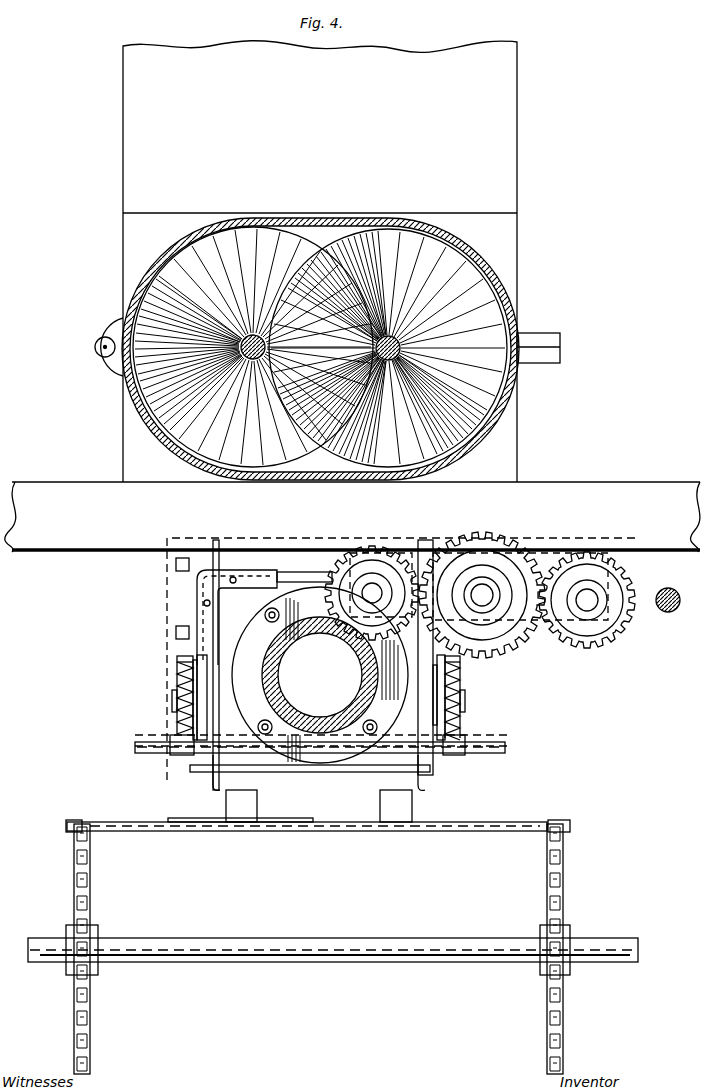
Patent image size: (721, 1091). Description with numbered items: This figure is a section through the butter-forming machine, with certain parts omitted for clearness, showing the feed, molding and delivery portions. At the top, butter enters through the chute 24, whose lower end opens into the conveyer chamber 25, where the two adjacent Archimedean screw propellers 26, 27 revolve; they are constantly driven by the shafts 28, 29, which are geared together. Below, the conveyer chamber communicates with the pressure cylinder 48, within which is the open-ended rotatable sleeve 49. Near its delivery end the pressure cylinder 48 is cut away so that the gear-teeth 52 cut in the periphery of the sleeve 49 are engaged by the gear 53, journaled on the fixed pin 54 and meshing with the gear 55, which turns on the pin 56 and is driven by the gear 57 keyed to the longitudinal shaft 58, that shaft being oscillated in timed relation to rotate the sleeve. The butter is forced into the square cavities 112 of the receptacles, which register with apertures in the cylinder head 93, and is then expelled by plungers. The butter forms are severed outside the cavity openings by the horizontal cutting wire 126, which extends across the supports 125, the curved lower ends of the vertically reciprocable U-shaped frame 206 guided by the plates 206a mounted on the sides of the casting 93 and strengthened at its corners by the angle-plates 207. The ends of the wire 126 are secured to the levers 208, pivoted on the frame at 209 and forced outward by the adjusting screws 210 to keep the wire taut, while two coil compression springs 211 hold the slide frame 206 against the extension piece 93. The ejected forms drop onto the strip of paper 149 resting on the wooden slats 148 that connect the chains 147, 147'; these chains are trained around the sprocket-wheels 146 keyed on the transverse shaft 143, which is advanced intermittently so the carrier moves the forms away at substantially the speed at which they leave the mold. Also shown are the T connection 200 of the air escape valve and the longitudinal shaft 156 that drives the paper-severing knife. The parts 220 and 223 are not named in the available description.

The chute 24 is at (125, 190).
The conveyer chamber 25 is at (517, 305).
The screw propeller 26 is at (388, 348).
The screw propeller 27 is at (253, 347).
The shaft 28 is at (398, 356).
The shaft 29 is at (250, 336).
The pressure cylinder 48 is at (322, 745).
The rotatable sleeve 49 is at (270, 648).
The gear-teeth 52 is at (320, 675).
The gear 53 is at (383, 545).
The fixed pin 54 is at (376, 590).
The gear 55 is at (490, 548).
The pin 56 is at (484, 593).
The gear 57 is at (587, 648).
The longitudinal shaft 58 is at (580, 606).
The cylinder head 93 is at (466, 705).
The cavities 112 is at (185, 668).
The supports 125 is at (240, 775).
The cutting wire 126 is at (325, 770).
The transverse shaft 143 is at (283, 945).
The sprocket-wheels 146 is at (92, 902).
The chain 147 is at (71, 813).
The chain 147' is at (565, 812).
The wooden slats 148 is at (153, 826).
The paper 149 is at (180, 814).
The longitudinal shaft 156 is at (665, 613).
The T connection 200 is at (240, 815).
The reciprocable frame 206 is at (304, 569).
The guide plates 206a is at (222, 562).
The angle-plates 207 is at (197, 590).
The levers 208 is at (183, 757).
The pivot 209 is at (180, 685).
The adjusting screws 210 is at (195, 703).
The coil compression springs 211 is at (178, 725).
The bar 220 is at (508, 750).
The post 223 is at (190, 660).